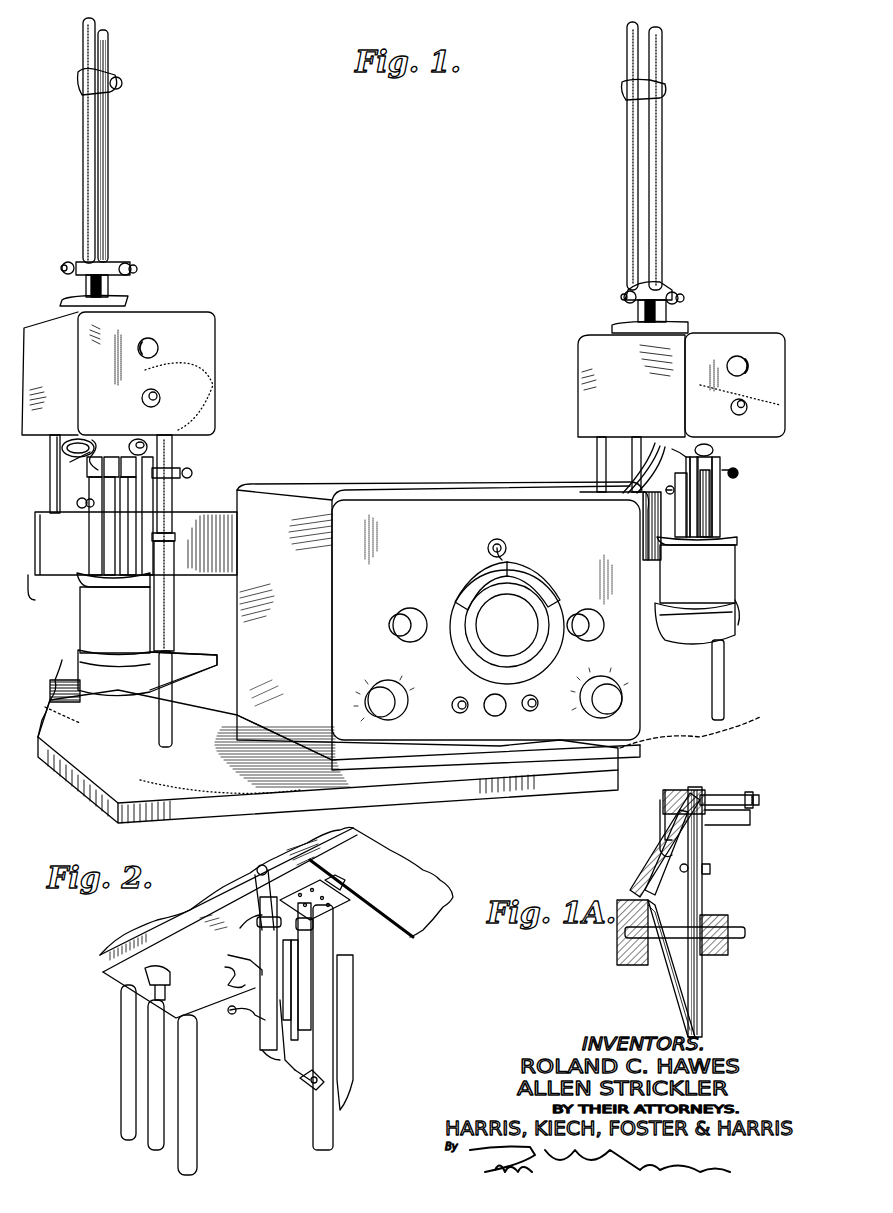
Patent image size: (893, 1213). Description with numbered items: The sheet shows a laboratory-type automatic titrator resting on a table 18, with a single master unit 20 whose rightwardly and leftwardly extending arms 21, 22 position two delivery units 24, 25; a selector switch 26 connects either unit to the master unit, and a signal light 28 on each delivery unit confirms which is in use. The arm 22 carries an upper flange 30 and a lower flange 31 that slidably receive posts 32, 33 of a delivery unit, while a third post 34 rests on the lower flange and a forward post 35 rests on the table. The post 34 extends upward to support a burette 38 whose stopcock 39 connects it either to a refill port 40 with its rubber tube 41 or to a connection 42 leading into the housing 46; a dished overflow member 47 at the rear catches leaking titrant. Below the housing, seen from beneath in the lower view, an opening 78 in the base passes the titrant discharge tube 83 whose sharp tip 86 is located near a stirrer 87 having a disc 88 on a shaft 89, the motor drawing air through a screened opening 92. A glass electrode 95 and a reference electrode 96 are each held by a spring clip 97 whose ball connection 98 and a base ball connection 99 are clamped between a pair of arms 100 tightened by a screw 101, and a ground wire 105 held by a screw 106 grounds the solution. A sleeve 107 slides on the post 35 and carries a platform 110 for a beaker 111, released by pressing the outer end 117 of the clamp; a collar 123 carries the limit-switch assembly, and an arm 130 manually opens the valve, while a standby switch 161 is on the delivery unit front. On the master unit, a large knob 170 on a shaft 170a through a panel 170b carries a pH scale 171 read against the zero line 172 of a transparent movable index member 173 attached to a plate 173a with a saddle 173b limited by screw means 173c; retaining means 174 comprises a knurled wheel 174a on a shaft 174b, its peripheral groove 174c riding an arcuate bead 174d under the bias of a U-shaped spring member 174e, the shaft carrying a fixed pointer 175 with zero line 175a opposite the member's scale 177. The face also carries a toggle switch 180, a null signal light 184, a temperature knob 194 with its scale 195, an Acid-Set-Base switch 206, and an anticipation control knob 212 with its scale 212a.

In FIG. 1, the table 18 is at (56, 690).
In FIG. 1, the master unit 20 is at (448, 462).
In FIG. 1, the rightwardly extending arm 21 is at (645, 540).
In FIG. 1, the leftwardly extending arm 22 is at (240, 514).
In FIG. 1, the delivery unit 24 is at (734, 312).
In FIG. 1, the delivery unit 25 is at (214, 298).
In FIG. 1, the selector switch 26 is at (405, 642).
In FIG. 1, the signal light 28 is at (158, 348).
In FIG. 1, the upper flange 30 is at (37, 513).
In FIG. 1, the lower flange 31 is at (34, 589).
In FIG. 1, the post 32 is at (53, 438).
In FIG. 2, the post 32 is at (122, 1046).
In FIG. 1, the post 33 is at (640, 498).
In FIG. 2, the post 33 is at (190, 1130).
In FIG. 1, the third post 34 is at (86, 190).
In FIG. 2, the third post 34 is at (160, 1098).
In FIG. 1, the forward post 35 is at (172, 710).
In FIG. 2, the forward post 35 is at (334, 1138).
In FIG. 1, the burette 38 is at (102, 158).
In FIG. 1, the stopcock 39 is at (112, 262).
In FIG. 1, the refill port 40 is at (66, 272).
In FIG. 1, the rubber tube 41 is at (72, 298).
In FIG. 1, the connection 42 is at (130, 280).
In FIG. 1, the housing 46 is at (578, 370).
In FIG. 2, the housing 46 is at (100, 960).
In FIG. 1, the dished overflow member 47 is at (130, 302).
In FIG. 2, the opening 78 is at (225, 975).
In FIG. 2, the titrant discharge tube 83 is at (265, 1030).
In FIG. 2, the tip 86 is at (296, 1072).
In FIG. 2, the stirrer 87 is at (290, 1090).
In FIG. 2, the disc 88 is at (310, 1086).
In FIG. 1, the shaft 89 is at (105, 540).
In FIG. 2, the shaft 89 is at (340, 1032).
In FIG. 2, the screened opening 92 is at (312, 886).
In FIG. 1, the glass electrode 95 is at (150, 492).
In FIG. 2, the glass electrode 95 is at (353, 1080).
In FIG. 1, the reference electrode 96 is at (90, 528).
In FIG. 2, the reference electrode 96 is at (270, 1058).
In FIG. 1, the spring clip 97 is at (100, 440).
In FIG. 2, the spring clip 97 is at (262, 875).
In FIG. 1, the ball connection 98 is at (86, 468).
In FIG. 2, the ball connection 98 is at (330, 1006).
In FIG. 1, the ball connection 99 is at (652, 443).
In FIG. 2, the ball connection 99 is at (300, 950).
In FIG. 1, the arms 100 is at (670, 445).
In FIG. 2, the arms 100 is at (245, 920).
In FIG. 1, the screw 101 is at (70, 458).
In FIG. 2, the screw 101 is at (240, 956).
In FIG. 1, the ground wire 105 is at (120, 556).
In FIG. 2, the ground wire 105 is at (340, 1050).
In FIG. 2, the screw 106 is at (340, 892).
In FIG. 1, the sleeve 107 is at (172, 603).
In FIG. 1, the platform 110 is at (112, 684).
In FIG. 1, the beaker 111 is at (88, 622).
In FIG. 1, the outer end 117 is at (202, 655).
In FIG. 1, the collar 123 is at (190, 470).
In FIG. 2, the arm 130 is at (250, 1008).
In FIG. 1, the standby switch 161 is at (160, 398).
In FIG. 1, the large knob 170 is at (507, 627).
In FIG. 1A, the large knob 170 is at (693, 963).
In FIG. 1A, the shaft 170a is at (740, 928).
In FIG. 1, the panel 170b is at (352, 570).
In FIG. 1A, the panel 170b is at (704, 1014).
In FIG. 1, the scale 171 is at (540, 600).
In FIG. 1A, the scale 171 is at (665, 840).
In FIG. 1, the zero line 172 is at (512, 565).
In FIG. 1, the movable index member 173 is at (462, 573).
In FIG. 1A, the movable index member 173 is at (686, 884).
In FIG. 1A, the plate 173a is at (704, 852).
In FIG. 1A, the saddle 173b is at (728, 952).
In FIG. 1A, the screw means 173c is at (710, 870).
In FIG. 1, the retaining means 174 is at (474, 536).
In FIG. 1A, the retaining means 174 is at (693, 790).
In FIG. 1A, the knurled adjusting wheel 174a is at (710, 790).
In FIG. 1A, the shaft 174b is at (730, 795).
In FIG. 1A, the peripheral groove 174c is at (690, 790).
In FIG. 1A, the arcuate bead 174d is at (672, 824).
In FIG. 1A, the U-shaped spring member 174e is at (725, 818).
In FIG. 1, the pointer 175 is at (478, 562).
In FIG. 1A, the pointer 175 is at (660, 804).
In FIG. 1, the zero line 175a is at (510, 552).
In FIG. 1, the scale 177 is at (528, 585).
In FIG. 1, the toggle switch 180 is at (452, 712).
In FIG. 1, the signal light 184 is at (500, 716).
In FIG. 1, the knob 194 is at (380, 714).
In FIG. 1, the scale 195 is at (372, 692).
In FIG. 1, the Acid-Set-Base switch 206 is at (600, 632).
In FIG. 1, the anticipation control knob 212 is at (622, 700).
In FIG. 1, the scale 212a is at (620, 690).